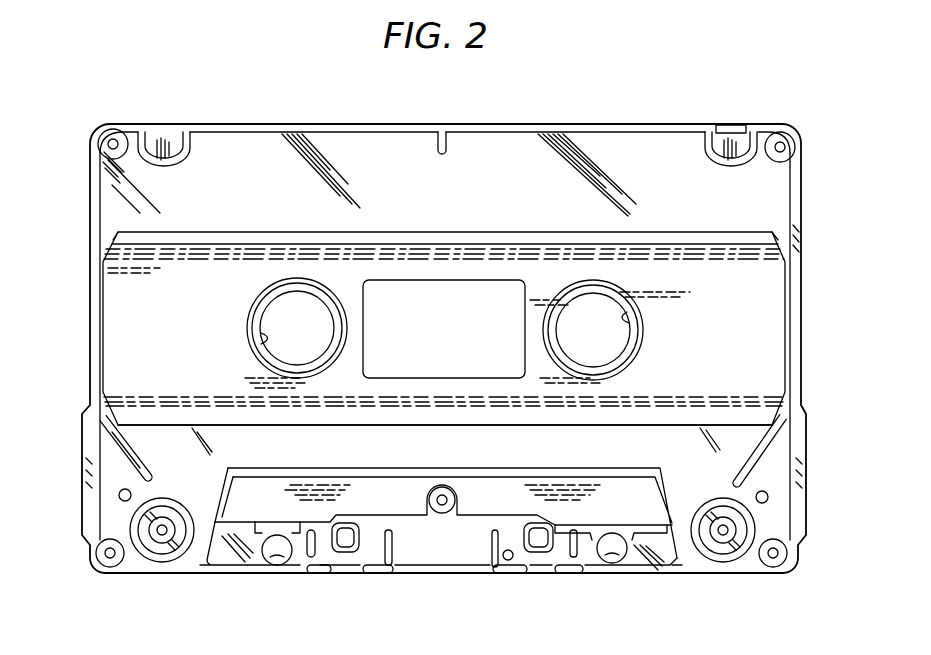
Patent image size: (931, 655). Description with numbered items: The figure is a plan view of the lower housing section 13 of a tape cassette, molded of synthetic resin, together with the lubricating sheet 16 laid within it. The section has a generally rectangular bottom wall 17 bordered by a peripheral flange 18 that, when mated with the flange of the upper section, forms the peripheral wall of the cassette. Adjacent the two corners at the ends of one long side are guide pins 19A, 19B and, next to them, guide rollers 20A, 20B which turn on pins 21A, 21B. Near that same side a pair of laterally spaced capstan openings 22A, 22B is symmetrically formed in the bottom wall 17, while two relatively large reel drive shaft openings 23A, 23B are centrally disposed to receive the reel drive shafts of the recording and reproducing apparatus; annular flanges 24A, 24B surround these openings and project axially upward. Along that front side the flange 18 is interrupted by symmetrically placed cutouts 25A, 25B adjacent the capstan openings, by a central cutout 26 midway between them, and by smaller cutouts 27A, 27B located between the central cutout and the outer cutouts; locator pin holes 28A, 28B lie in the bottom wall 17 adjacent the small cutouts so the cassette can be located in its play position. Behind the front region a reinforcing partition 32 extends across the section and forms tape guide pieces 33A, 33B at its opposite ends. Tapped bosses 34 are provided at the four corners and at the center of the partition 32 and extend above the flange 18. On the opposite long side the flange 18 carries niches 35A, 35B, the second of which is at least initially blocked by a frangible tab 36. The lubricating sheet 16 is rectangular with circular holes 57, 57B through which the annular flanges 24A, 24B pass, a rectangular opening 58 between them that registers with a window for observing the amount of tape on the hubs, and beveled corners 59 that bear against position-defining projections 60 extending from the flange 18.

The lower housing section 13 is at (601, 124).
The lubricating sheet 16 is at (498, 245).
The bottom wall 17 is at (778, 183).
The peripheral flange 18 is at (802, 331).
The guide pin 19A is at (118, 495).
The guide pin 19B is at (768, 507).
The guide roller 20A is at (152, 553).
The guide roller 20B is at (740, 553).
The pin 21A is at (165, 528).
The pin 21B is at (725, 535).
The capstan opening 22A is at (272, 563).
The capstan opening 22B is at (613, 563).
The reel drive shaft opening 23A is at (266, 340).
The reel drive shaft opening 23B is at (634, 312).
The annular flange 24A is at (263, 302).
The annular flange 24B is at (650, 336).
The cutout 25A is at (212, 578).
The cutout 25B is at (674, 578).
The central cutout 26 is at (412, 572).
The small cutout 27A is at (330, 575).
The small cutout 27B is at (531, 578).
The locator pin hole 28A is at (341, 530).
The locator pin hole 28B is at (534, 522).
The reinforcing partition 32 is at (484, 522).
The tape guide piece 33A is at (288, 525).
The tape guide piece 33B is at (612, 532).
The tapped boss 34 is at (110, 130).
The niche 35A is at (168, 134).
The niche 35B is at (745, 145).
The removable tab 36 is at (732, 128).
The circular hole 57 is at (320, 283).
The circular hole 57B is at (592, 283).
The rectangular opening 58 is at (462, 378).
The beveled corner 59 is at (108, 250).
The position-defining projection 60 is at (115, 228).